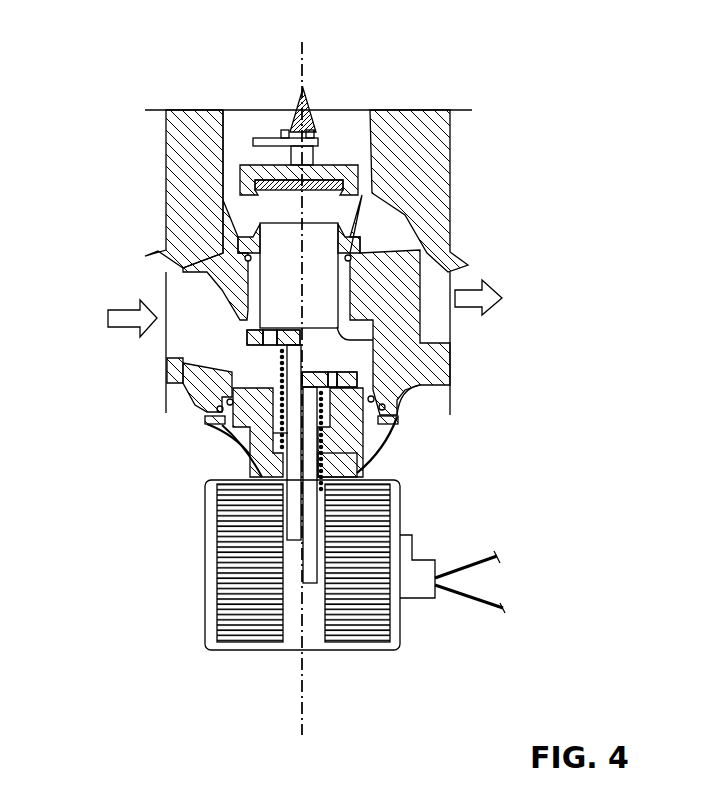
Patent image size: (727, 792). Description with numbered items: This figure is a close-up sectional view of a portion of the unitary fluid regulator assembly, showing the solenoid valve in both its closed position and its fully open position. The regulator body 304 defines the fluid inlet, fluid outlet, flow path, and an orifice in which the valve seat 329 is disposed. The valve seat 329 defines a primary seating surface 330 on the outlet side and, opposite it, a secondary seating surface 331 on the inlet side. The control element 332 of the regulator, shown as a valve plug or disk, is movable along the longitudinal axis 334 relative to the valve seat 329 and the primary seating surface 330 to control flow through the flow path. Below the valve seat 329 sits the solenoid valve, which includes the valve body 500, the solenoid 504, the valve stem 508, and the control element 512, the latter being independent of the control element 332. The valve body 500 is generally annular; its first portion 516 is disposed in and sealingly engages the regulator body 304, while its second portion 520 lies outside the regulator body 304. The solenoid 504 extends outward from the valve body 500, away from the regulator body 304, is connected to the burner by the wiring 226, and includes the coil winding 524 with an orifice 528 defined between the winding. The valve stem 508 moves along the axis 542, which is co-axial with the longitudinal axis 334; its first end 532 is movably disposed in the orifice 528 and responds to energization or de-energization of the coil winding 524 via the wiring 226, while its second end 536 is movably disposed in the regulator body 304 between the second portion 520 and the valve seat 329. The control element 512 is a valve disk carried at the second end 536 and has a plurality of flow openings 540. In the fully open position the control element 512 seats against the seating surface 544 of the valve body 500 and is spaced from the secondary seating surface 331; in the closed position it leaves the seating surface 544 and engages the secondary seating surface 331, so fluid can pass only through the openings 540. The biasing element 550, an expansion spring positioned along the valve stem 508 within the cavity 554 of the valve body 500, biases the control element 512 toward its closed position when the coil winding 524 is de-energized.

The wiring 226 is at (478, 615).
The regulator body 304 is at (430, 185).
The valve seat 329 is at (352, 265).
The primary seating surface 330 is at (347, 234).
The secondary seating surface 331 is at (360, 340).
The control element 332 is at (336, 155).
The longitudinal axis 334 is at (303, 57).
The axis 542 is at (374, 382).
The valve body 500 is at (372, 440).
The solenoid 504 is at (368, 655).
The valve stem 508 is at (280, 425).
The control element 512 is at (236, 350).
The first portion 516 is at (393, 422).
The second portion 520 is at (352, 468).
The coil winding 524 is at (343, 638).
The orifice 528 is at (297, 640).
The first end 532 is at (292, 545).
The second end 536 is at (208, 420).
The flow openings 540 is at (232, 343).
The seating surface 544 is at (372, 447).
The biasing element 550 is at (262, 440).
The cavity 554 is at (272, 452).